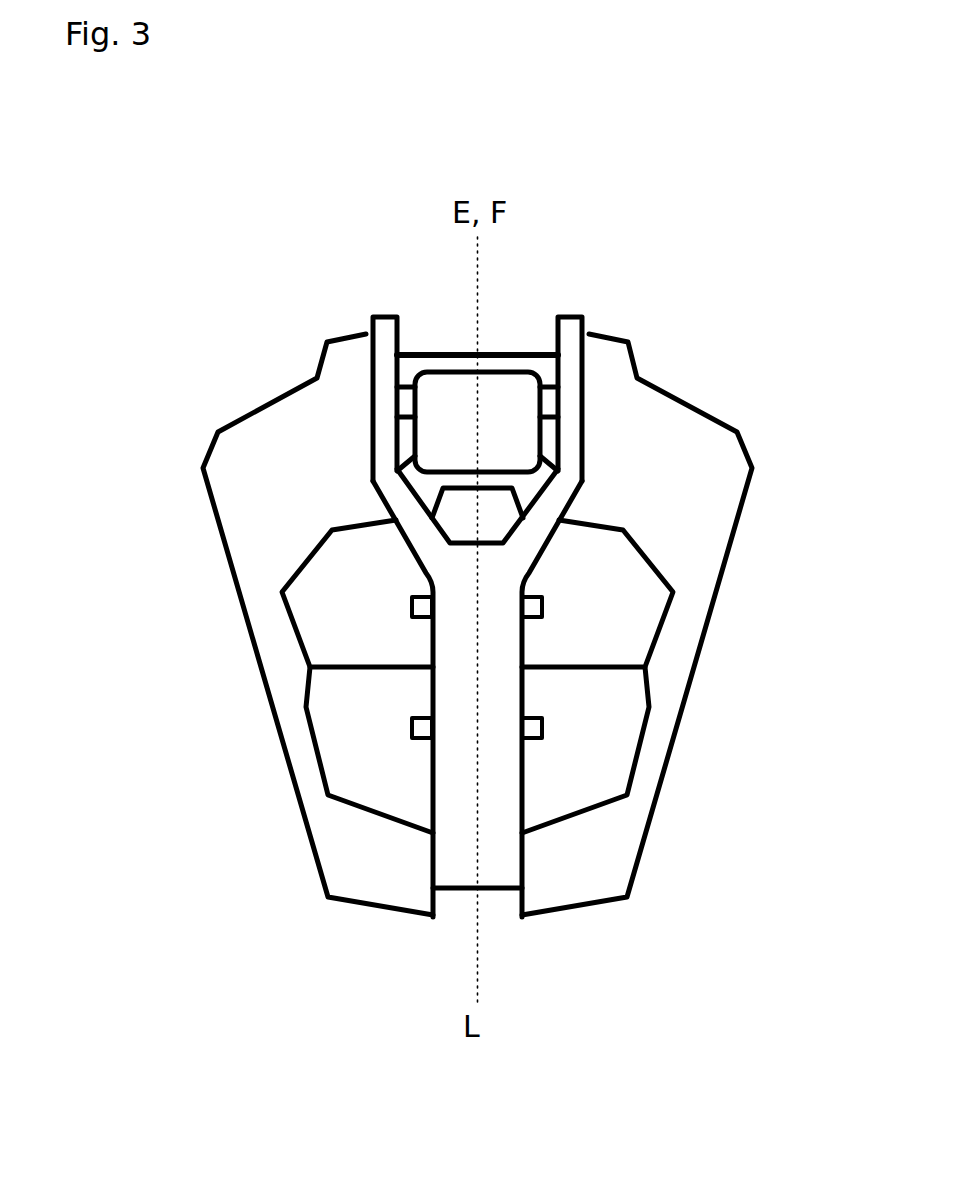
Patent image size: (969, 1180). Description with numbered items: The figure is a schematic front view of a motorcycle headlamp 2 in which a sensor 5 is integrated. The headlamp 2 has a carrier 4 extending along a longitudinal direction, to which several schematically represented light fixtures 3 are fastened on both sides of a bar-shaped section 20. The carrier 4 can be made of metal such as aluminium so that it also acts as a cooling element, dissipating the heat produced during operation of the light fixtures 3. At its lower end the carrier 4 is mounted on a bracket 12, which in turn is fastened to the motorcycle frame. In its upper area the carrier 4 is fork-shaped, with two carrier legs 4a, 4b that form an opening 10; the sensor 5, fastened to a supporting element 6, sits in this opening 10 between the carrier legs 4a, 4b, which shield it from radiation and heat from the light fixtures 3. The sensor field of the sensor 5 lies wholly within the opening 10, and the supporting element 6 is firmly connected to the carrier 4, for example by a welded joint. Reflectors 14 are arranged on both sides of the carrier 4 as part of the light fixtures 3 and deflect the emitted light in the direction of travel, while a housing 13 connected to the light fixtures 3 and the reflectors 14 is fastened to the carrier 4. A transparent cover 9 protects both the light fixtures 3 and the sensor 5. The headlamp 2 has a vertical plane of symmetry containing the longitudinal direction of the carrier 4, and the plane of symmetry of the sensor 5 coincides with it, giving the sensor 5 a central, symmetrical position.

The headlamp 2 is at (272, 913).
The light fixtures 3 is at (410, 603).
The carrier 4 is at (505, 565).
The carrier leg 4a is at (387, 332).
The carrier leg 4b is at (573, 330).
The sensor 5 is at (503, 422).
The supporting element 6 is at (543, 478).
The transparent cover 9 is at (664, 474).
The opening 10 is at (422, 332).
The bracket 12 is at (495, 870).
The housing 13 is at (383, 887).
The reflectors 14 is at (370, 555).
The bar-shaped section 20 is at (460, 647).